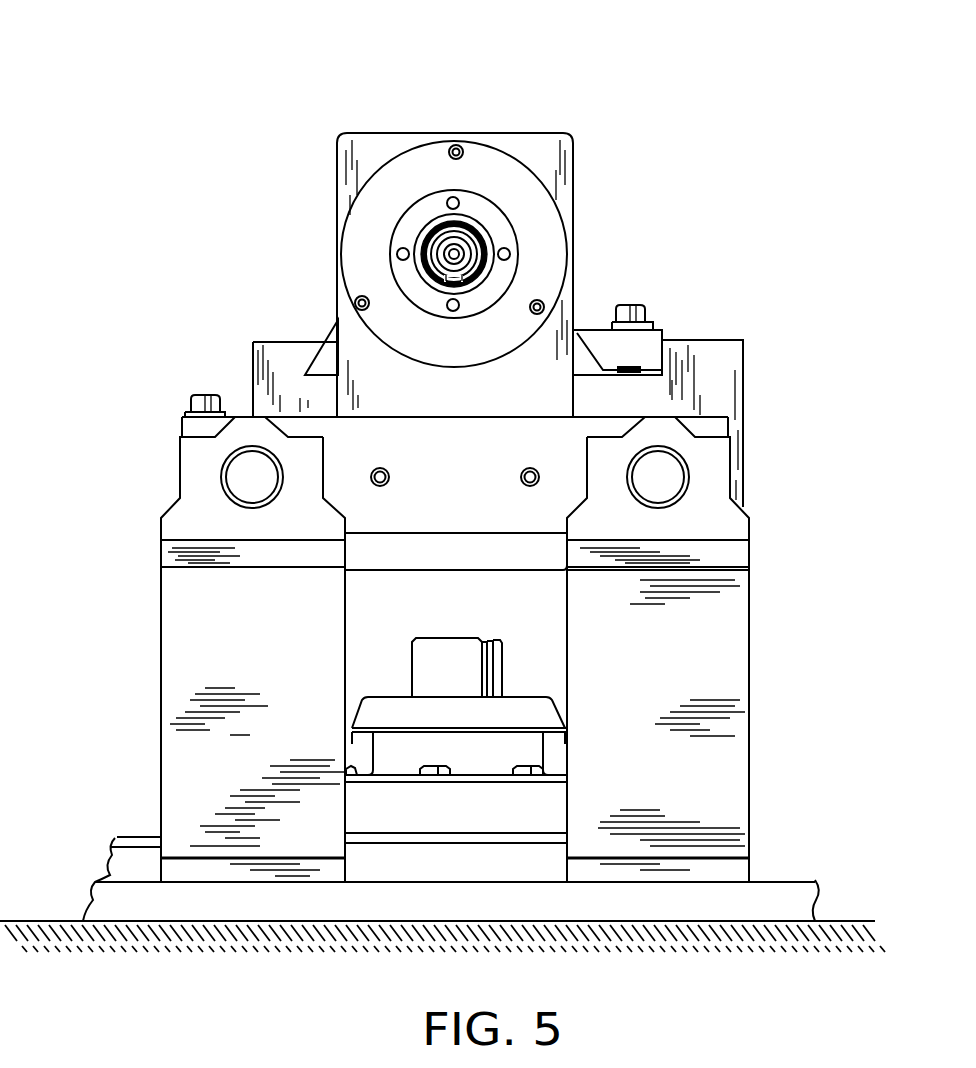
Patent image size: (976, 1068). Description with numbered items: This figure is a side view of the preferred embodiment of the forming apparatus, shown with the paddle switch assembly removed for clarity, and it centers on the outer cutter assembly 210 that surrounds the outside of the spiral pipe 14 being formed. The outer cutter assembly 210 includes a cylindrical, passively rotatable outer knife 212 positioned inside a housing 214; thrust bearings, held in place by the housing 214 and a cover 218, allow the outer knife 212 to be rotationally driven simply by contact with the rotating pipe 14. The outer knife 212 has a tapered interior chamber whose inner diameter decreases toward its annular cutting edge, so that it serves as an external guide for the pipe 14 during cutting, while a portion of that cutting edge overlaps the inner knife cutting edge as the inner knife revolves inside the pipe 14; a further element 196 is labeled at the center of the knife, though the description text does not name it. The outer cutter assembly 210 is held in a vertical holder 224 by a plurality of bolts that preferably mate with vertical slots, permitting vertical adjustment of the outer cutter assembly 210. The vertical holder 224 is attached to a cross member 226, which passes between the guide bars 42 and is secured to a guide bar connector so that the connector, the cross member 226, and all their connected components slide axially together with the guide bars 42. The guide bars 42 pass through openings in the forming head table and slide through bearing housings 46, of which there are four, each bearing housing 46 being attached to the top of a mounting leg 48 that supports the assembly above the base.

The outer cutter assembly 210 is at (376, 150).
The vertical holder 224 is at (436, 132).
The housing 214 is at (516, 153).
The cover 218 is at (402, 223).
The outer knife 212 is at (495, 224).
The collet ring 196 is at (488, 268).
The spiral pipe 14 is at (476, 287).
The cross member 226 is at (303, 417).
The bearing housings 46 is at (178, 442).
The guide bars 42 is at (233, 503).
The mounting leg 48 is at (275, 657).